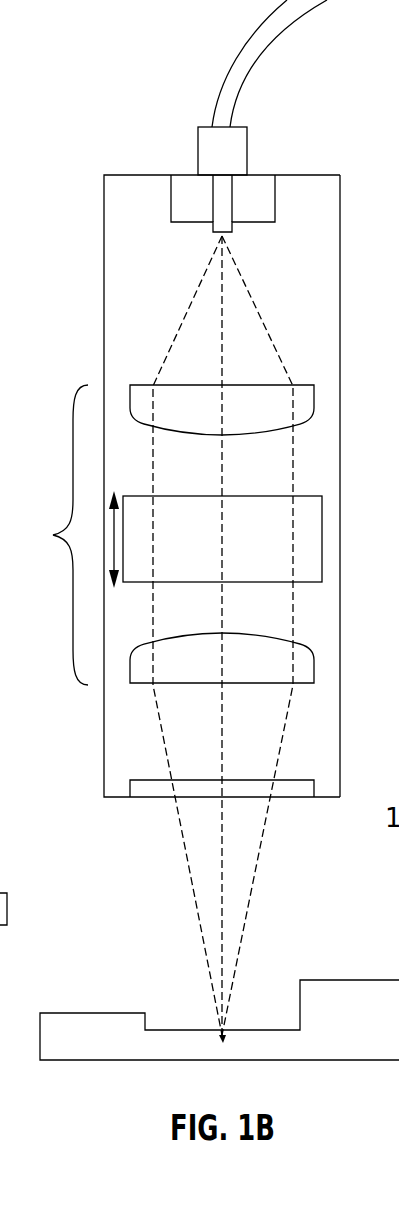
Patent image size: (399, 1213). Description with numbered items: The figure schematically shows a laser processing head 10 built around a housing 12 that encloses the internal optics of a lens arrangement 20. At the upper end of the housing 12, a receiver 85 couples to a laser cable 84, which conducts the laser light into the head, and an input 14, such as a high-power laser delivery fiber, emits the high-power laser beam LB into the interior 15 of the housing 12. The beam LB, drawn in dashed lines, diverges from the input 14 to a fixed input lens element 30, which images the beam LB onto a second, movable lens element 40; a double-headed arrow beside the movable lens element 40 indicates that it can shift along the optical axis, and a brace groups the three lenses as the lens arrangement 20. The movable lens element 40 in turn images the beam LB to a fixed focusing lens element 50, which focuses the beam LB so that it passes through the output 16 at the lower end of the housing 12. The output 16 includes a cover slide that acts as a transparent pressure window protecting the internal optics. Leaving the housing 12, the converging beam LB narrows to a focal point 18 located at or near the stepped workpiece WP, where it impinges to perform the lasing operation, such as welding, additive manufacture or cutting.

The laser processing head 10 is at (46, 147).
The housing 12 is at (104, 258).
The input 14 is at (233, 198).
The housing interior 15 is at (340, 268).
The output 16 is at (315, 788).
The focal point 18 is at (223, 1044).
The lens arrangement 20 is at (205, 527).
The fixed input lens element 30 is at (315, 398).
The movable lens element 40 is at (322, 505).
The fixed focusing lens element 50 is at (315, 672).
The laser cable 84 is at (246, 33).
The receiver 85 is at (197, 152).
The laser beam LB is at (247, 913).
The workpiece WP is at (92, 1013).